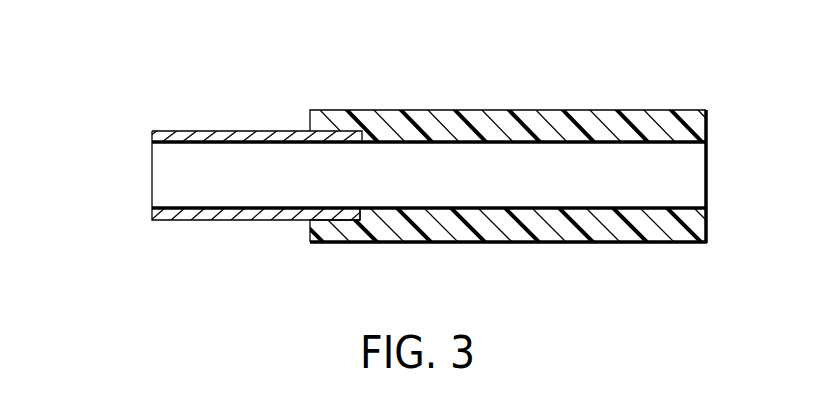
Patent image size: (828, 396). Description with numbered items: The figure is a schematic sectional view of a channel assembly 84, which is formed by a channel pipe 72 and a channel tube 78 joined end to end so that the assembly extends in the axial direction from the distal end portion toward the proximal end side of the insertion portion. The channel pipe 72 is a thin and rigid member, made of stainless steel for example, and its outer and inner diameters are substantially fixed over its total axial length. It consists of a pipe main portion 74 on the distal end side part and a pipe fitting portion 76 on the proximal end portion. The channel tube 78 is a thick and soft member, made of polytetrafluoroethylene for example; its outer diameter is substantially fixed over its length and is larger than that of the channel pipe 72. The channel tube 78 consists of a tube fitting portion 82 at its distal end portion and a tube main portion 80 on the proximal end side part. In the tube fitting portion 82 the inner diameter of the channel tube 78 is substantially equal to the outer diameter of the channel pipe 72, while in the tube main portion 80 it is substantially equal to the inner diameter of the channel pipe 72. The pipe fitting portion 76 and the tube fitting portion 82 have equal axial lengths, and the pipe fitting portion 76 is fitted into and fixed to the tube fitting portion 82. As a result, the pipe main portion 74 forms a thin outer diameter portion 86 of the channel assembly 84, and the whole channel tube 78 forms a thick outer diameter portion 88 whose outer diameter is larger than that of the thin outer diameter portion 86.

The channel pipe 72 is at (195, 122).
The pipe main portion 74 is at (194, 212).
The pipe fitting portion 76 is at (320, 226).
The channel tube 78 is at (495, 95).
The tube main portion 80 is at (593, 235).
The tube fitting portion 82 is at (347, 228).
The channel assembly 84 is at (113, 108).
The thin outer diameter portion 86 is at (270, 131).
The thick outer diameter portion 88 is at (615, 103).